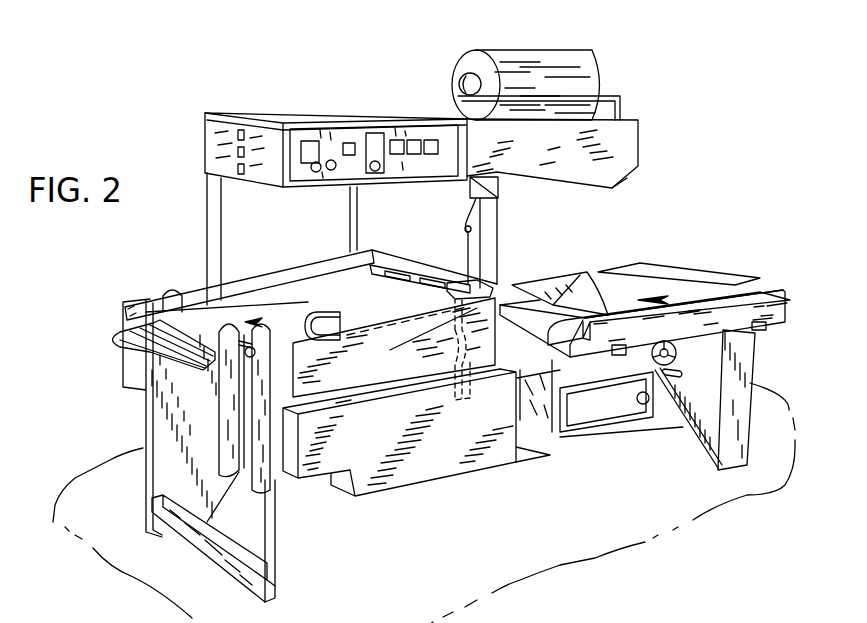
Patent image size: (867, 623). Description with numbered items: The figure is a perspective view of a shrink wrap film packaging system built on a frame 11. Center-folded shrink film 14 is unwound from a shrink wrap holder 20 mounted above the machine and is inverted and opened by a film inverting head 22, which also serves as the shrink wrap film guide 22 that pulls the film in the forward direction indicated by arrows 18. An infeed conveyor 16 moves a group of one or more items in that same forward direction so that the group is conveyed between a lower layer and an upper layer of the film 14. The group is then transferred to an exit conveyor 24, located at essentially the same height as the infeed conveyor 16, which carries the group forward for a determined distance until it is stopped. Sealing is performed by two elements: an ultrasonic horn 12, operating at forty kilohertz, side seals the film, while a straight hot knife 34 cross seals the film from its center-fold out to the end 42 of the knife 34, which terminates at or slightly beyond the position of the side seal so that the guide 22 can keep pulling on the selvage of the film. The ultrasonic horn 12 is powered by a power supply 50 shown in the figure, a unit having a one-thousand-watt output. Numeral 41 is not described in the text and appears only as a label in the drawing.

The frame 11 is at (390, 493).
The ultrasonic horn 12 is at (467, 360).
The center-folded shrink film 14 is at (577, 78).
The infeed conveyor 16 is at (650, 272).
The arrows 18 is at (245, 345).
The shrink wrap holder 20 is at (468, 82).
The film inverting head 22 is at (423, 345).
The exit conveyor 24 is at (190, 322).
The straight hot knife 34 is at (423, 262).
The rail 41 is at (367, 252).
The end of the knife 42 is at (487, 283).
The power supply 50 is at (613, 408).